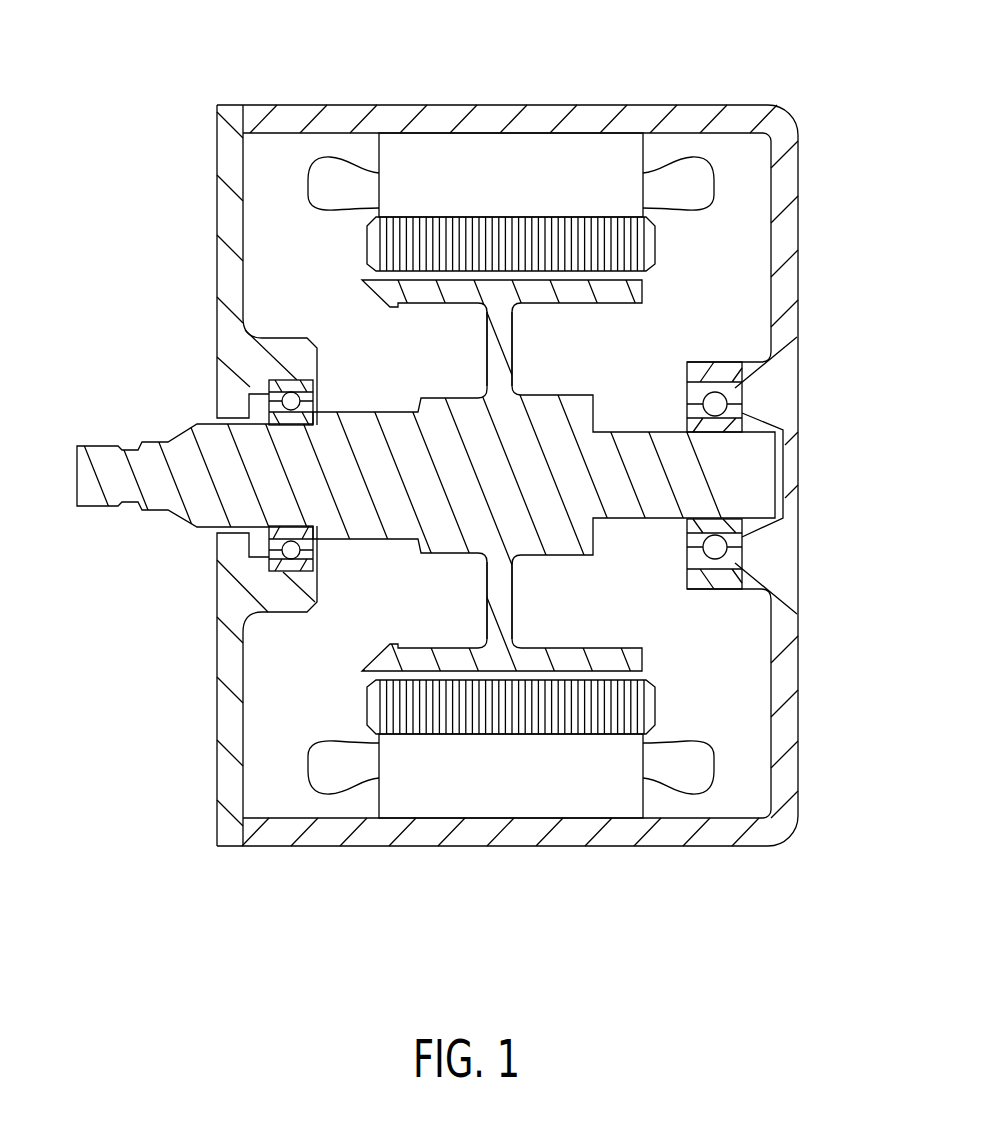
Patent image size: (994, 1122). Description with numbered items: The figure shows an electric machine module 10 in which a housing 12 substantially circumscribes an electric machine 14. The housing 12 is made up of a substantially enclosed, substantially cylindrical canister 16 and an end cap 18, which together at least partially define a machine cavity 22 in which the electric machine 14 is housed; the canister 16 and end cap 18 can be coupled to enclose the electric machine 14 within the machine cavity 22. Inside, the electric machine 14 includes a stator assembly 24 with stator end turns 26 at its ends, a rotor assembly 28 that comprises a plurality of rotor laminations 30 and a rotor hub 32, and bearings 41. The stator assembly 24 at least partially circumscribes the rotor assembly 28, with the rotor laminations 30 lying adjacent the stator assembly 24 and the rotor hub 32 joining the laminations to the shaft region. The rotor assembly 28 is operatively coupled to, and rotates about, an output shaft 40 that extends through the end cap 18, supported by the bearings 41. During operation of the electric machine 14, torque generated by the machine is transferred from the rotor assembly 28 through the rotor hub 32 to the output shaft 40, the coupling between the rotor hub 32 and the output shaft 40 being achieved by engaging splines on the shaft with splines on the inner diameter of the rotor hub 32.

The electric machine module 10 is at (138, 103).
The housing 12 is at (498, 104).
The electric machine 14 is at (340, 709).
The canister 16 is at (788, 113).
The end cap 18 is at (217, 124).
The machine cavity 22 is at (743, 245).
The stator assembly 24 is at (568, 158).
The stator end turns 26 is at (697, 163).
The rotor assembly 28 is at (410, 267).
The rotor laminations 30 is at (408, 243).
The rotor hub 32 is at (487, 355).
The output shaft 40 is at (77, 448).
The bearings 41 is at (287, 395).